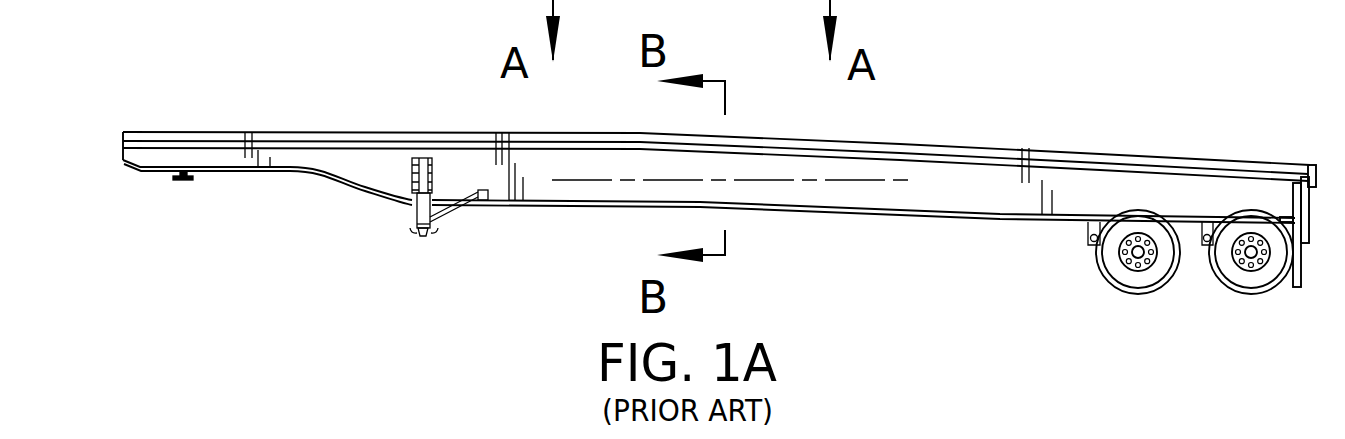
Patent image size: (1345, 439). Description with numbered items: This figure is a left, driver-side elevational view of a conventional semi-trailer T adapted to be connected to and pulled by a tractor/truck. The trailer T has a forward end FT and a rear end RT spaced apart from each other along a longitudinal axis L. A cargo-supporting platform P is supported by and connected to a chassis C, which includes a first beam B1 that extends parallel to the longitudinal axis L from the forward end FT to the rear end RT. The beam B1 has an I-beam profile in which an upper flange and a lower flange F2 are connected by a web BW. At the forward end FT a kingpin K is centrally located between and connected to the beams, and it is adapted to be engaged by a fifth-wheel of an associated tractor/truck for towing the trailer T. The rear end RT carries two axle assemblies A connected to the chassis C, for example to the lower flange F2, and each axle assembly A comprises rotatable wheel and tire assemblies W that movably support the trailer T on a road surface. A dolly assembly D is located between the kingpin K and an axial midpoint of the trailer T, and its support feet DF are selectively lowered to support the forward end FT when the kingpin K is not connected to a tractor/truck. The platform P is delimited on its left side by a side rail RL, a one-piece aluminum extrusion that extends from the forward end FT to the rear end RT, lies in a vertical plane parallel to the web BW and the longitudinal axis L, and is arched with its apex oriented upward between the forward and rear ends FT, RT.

The semi-trailer T is at (1037, 103).
The forward end FT is at (168, 128).
The rear end RT is at (1245, 157).
The cargo-supporting platform P is at (322, 128).
The kingpin K is at (182, 182).
The left side rail RL is at (368, 138).
The dolly assembly D is at (438, 232).
The support feet DF is at (418, 240).
The longitudinal axis L is at (682, 180).
The lower flange F2 is at (907, 220).
The web BW is at (967, 197).
The chassis C is at (1025, 228).
The first beam B1 is at (1082, 195).
The wheel and tire assemblies W is at (1117, 288).
The axle assembly A is at (1145, 297).